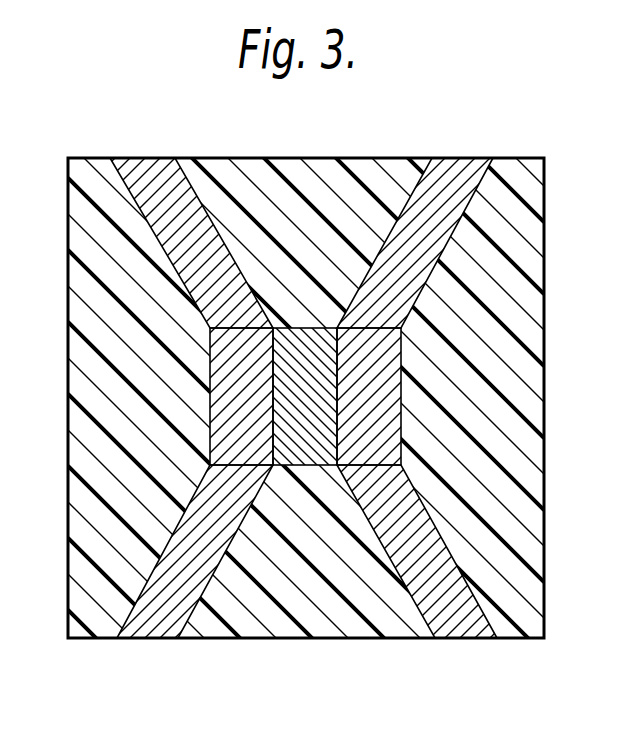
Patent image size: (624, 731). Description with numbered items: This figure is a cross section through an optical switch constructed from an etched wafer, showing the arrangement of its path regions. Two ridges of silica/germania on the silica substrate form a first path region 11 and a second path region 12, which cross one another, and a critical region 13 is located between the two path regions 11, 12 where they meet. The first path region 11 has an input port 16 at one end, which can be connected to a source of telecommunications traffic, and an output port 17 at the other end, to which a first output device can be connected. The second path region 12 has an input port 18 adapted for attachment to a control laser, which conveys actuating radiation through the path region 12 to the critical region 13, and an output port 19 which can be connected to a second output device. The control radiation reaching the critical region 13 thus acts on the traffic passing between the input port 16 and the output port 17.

The path region 11 is at (245, 384).
The path region 12 is at (368, 382).
The critical region 13 is at (292, 360).
The input port 16 is at (157, 158).
The output port 17 is at (152, 638).
The input port 18 is at (470, 158).
The output port 19 is at (470, 640).